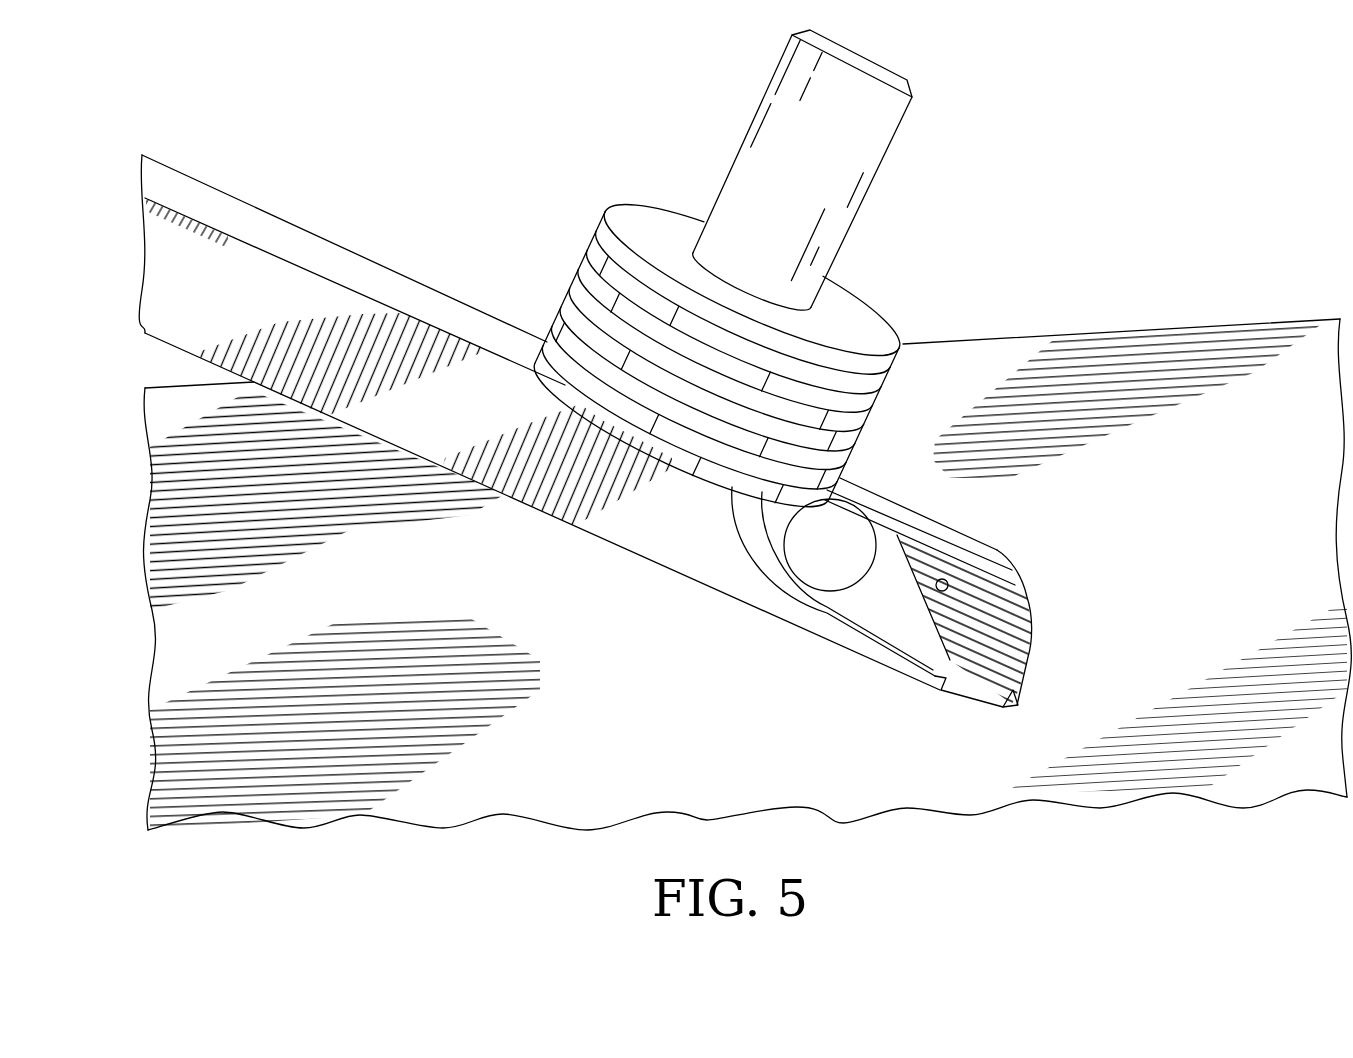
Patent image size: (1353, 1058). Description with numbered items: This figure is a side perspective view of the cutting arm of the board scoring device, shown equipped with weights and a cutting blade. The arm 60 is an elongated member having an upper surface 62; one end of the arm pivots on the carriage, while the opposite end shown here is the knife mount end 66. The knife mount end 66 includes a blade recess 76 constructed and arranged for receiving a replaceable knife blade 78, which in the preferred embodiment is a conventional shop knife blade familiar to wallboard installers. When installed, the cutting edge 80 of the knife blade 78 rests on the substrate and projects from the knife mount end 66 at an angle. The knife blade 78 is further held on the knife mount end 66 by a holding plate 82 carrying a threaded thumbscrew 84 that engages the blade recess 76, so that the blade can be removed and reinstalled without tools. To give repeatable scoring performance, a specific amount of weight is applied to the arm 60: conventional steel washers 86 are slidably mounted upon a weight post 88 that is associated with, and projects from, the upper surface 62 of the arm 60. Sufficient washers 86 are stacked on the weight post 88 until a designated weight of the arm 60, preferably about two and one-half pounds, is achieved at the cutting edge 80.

The arm 60 is at (175, 253).
The upper surface 62 is at (455, 316).
The knife mount end 66 is at (983, 547).
The blade recess 76 is at (1012, 578).
The knife blade 78 is at (1017, 695).
The cutting edge 80 is at (1010, 712).
The holding plate 82 is at (902, 600).
The threaded thumbscrew 84 is at (833, 548).
The washers 86 is at (642, 213).
The weight post 88 is at (840, 136).